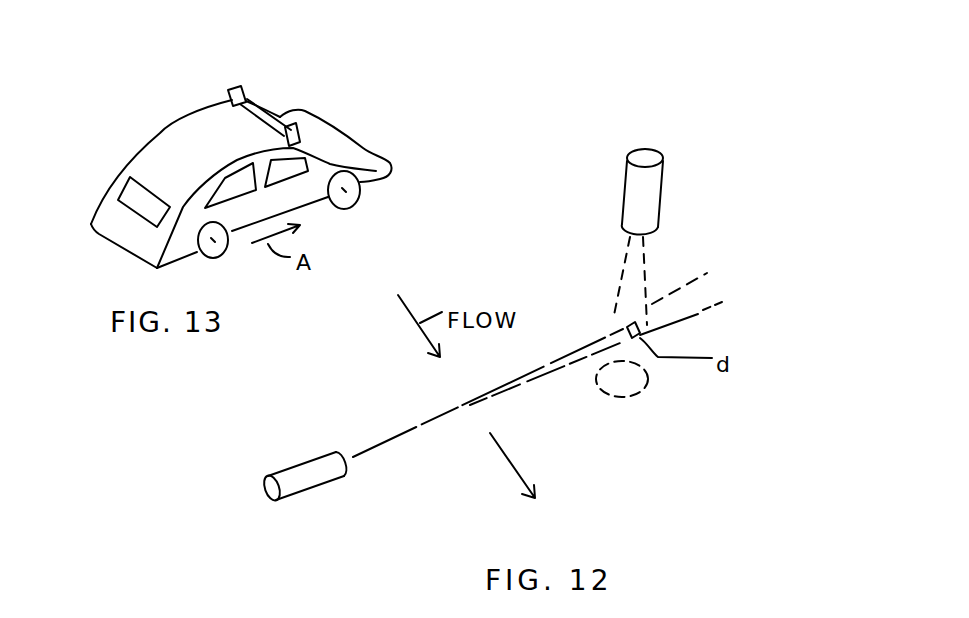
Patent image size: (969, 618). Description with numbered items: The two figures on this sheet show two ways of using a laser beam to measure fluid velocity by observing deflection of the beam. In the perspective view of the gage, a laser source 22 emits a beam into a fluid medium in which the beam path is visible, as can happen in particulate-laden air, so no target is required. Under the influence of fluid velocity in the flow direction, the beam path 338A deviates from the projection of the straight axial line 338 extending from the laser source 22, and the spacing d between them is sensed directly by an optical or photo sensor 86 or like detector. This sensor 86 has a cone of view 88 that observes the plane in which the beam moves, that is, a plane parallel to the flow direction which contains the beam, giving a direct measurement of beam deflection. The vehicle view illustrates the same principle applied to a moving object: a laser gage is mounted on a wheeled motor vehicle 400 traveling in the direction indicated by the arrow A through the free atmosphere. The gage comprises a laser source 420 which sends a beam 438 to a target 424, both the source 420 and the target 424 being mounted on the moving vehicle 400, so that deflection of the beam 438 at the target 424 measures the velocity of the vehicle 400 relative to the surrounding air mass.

In FIG. 13, the wheeled motor vehicle 400 is at (157, 130).
In FIG. 13, the target 424 is at (237, 86).
In FIG. 13, the beam 438 is at (257, 105).
In FIG. 13, the laser source 420 is at (298, 126).
In FIG. 12, the optical or photo sensor 86 is at (662, 193).
In FIG. 12, the cone of view 88 is at (649, 269).
In FIG. 12, the straight axial line 338 is at (767, 284).
In FIG. 12, the beam path 338A is at (587, 347).
In FIG. 12, the laser source 22 is at (373, 518).